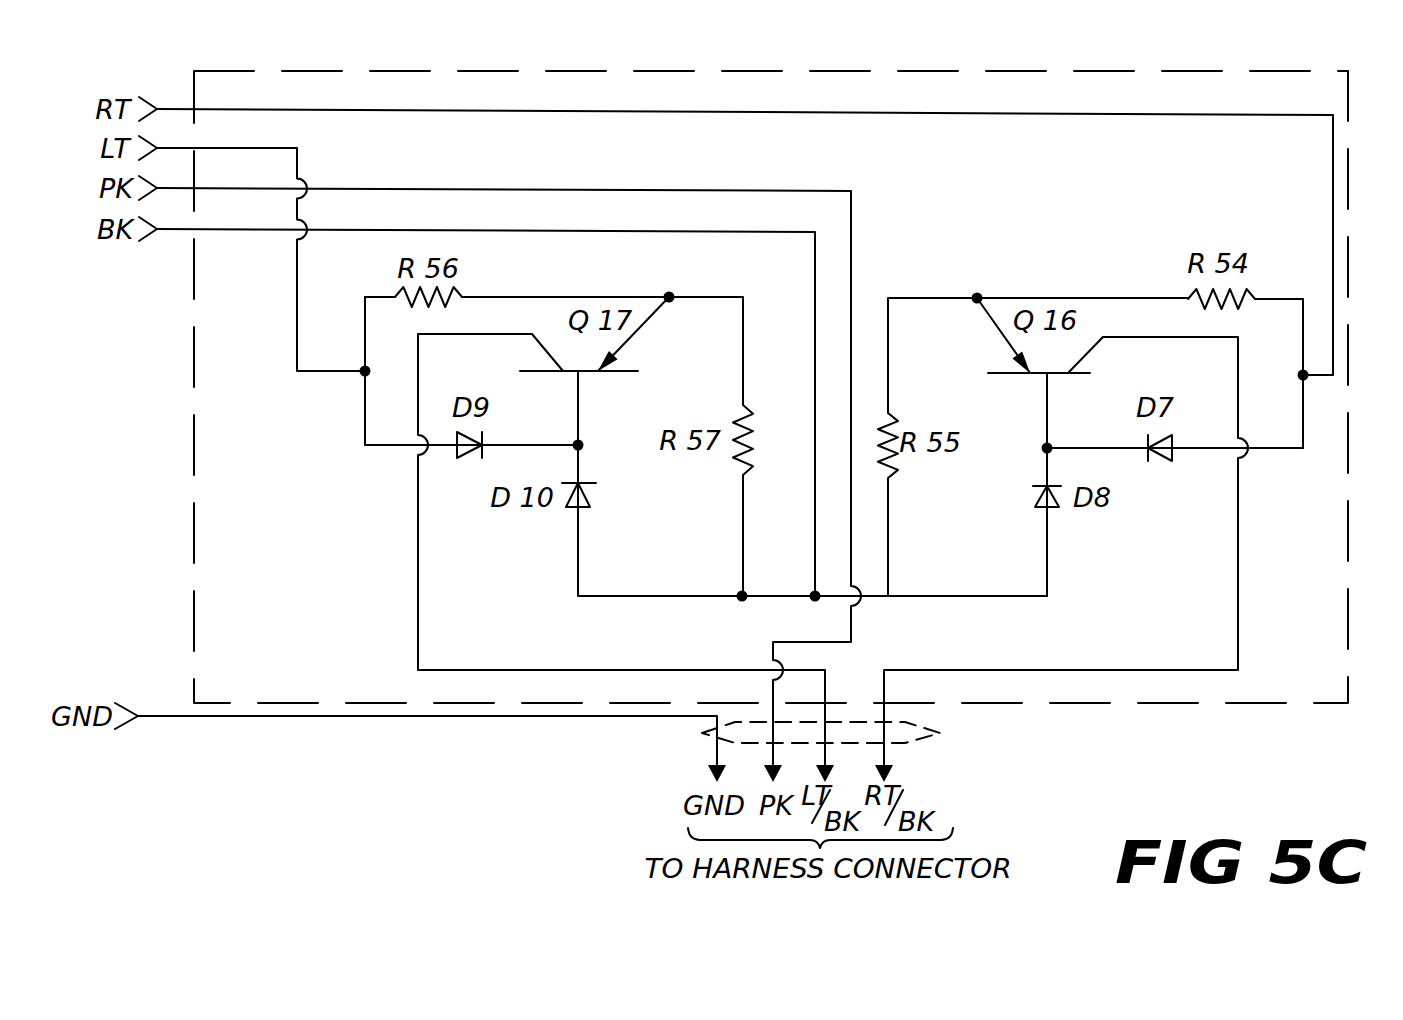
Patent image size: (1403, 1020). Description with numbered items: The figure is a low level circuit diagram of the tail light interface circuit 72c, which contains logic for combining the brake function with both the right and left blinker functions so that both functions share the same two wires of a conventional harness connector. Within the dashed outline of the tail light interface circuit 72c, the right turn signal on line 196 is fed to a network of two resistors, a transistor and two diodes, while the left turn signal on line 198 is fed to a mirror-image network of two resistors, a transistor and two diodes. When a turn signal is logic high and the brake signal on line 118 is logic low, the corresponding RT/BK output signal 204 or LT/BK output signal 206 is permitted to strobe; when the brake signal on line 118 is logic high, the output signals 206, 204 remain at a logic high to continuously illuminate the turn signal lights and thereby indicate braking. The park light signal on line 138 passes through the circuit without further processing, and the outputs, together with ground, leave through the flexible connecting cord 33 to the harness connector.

The right turn signal line 196 is at (262, 109).
The left turn signal line 198 is at (297, 148).
The brake signal line 118 is at (238, 230).
The park light signal line 138 is at (278, 190).
The LT/BK output signal 206 is at (707, 670).
The RT/BK output signal 204 is at (1040, 670).
The flexible connecting cord 33 is at (940, 735).
The tail light interface circuit 72c is at (1186, 72).